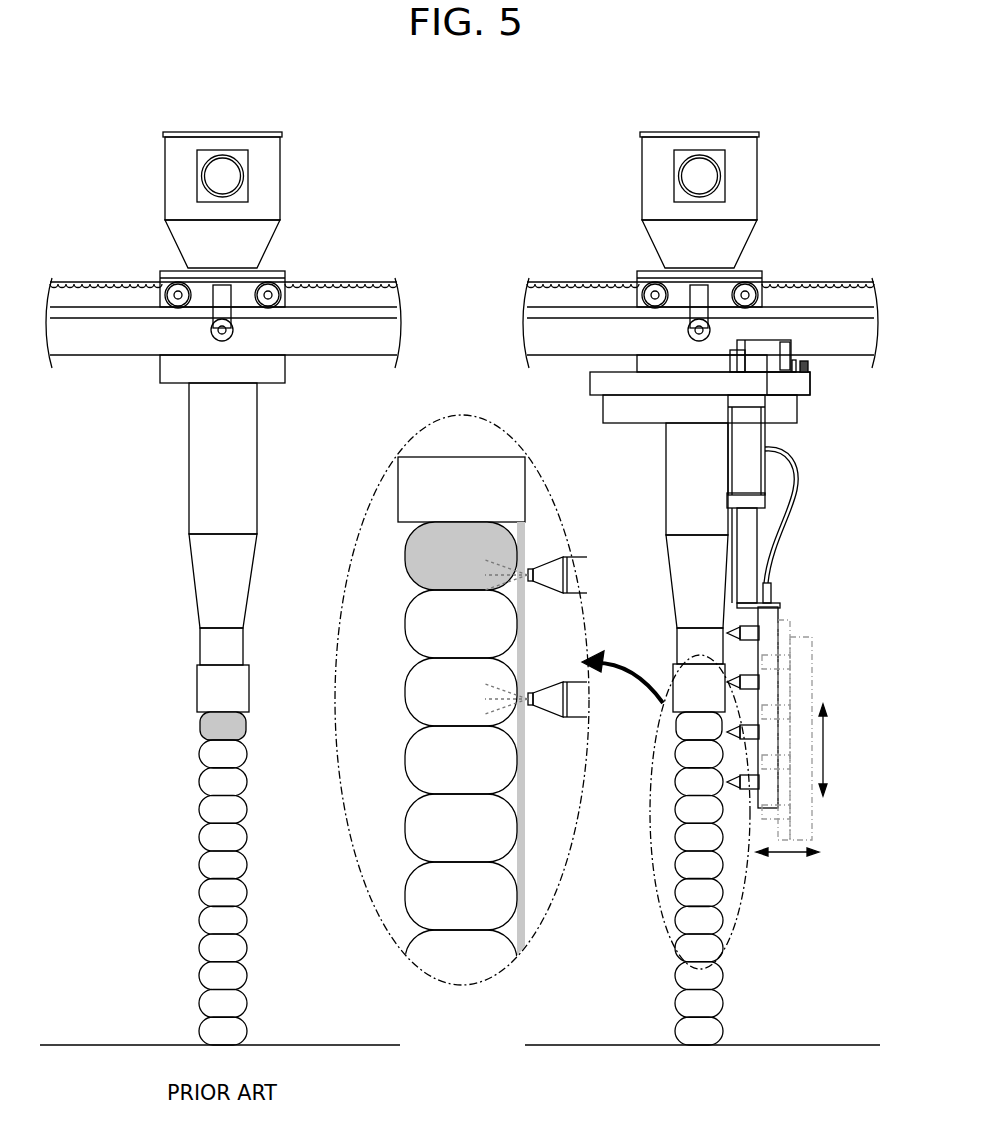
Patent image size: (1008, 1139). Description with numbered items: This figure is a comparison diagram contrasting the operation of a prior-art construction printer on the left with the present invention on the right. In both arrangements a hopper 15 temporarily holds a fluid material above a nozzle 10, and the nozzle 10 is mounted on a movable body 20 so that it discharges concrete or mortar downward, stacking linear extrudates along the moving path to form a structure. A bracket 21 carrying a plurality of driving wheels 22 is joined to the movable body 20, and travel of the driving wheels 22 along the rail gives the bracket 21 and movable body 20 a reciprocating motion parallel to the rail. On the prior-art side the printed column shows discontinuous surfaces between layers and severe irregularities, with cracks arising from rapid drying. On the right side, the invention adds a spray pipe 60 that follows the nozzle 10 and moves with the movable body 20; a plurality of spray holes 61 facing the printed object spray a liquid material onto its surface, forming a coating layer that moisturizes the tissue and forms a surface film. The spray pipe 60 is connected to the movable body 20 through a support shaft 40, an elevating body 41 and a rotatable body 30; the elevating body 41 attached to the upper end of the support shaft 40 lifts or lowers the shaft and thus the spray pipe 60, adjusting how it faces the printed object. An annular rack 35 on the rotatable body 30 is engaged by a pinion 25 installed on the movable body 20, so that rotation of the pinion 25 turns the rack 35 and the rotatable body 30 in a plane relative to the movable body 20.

The nozzle 10 is at (200, 688).
The hopper 15 is at (166, 162).
The movable body 20 is at (162, 377).
The bracket 21 is at (160, 271).
The driving wheels 22 is at (270, 293).
The pinion 25 is at (810, 366).
The rotatable body 30 is at (592, 385).
The annular rack 35 is at (802, 376).
The support shaft 40 is at (748, 565).
The elevating body 41 is at (760, 470).
The spray pipe 60 is at (768, 682).
The spray holes 61 is at (552, 712).